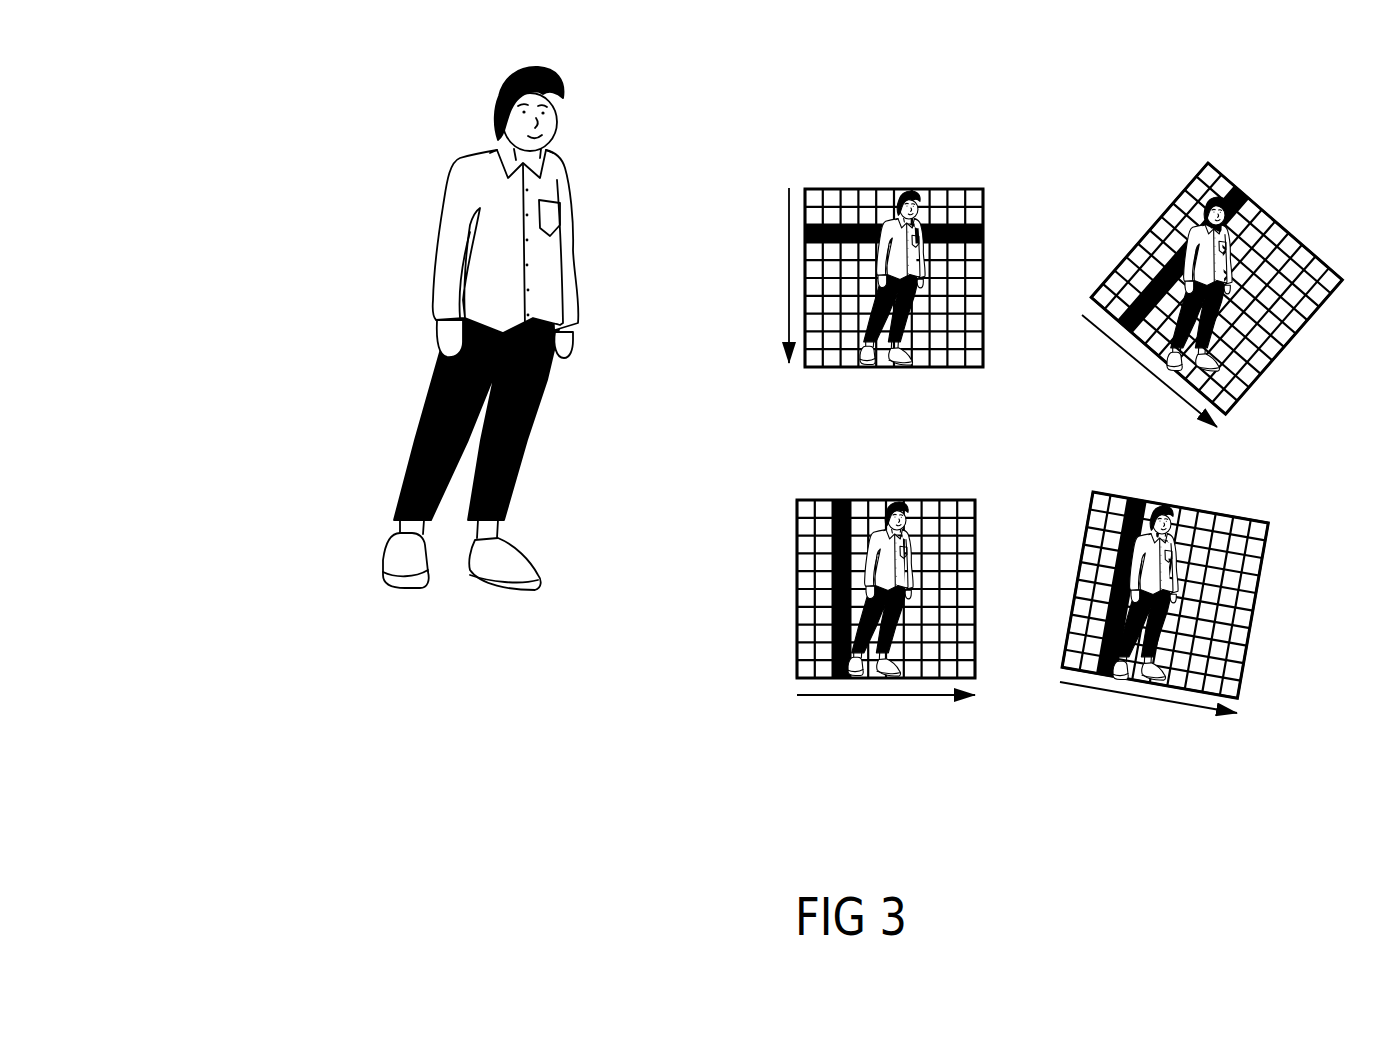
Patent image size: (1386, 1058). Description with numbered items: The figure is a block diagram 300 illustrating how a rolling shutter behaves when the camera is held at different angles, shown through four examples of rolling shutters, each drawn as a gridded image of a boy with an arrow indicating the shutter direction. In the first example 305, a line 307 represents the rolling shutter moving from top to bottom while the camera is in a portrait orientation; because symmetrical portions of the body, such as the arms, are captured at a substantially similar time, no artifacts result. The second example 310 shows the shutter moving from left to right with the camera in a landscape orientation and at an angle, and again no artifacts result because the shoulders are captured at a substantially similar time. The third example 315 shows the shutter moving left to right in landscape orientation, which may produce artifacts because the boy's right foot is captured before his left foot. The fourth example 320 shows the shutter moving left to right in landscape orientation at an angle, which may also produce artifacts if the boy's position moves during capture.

The block diagram 300 is at (212, 73).
The first example 305 is at (944, 162).
The line 307 is at (985, 228).
The second example 310 is at (1222, 168).
The third example 315 is at (872, 490).
The fourth example 320 is at (1224, 505).